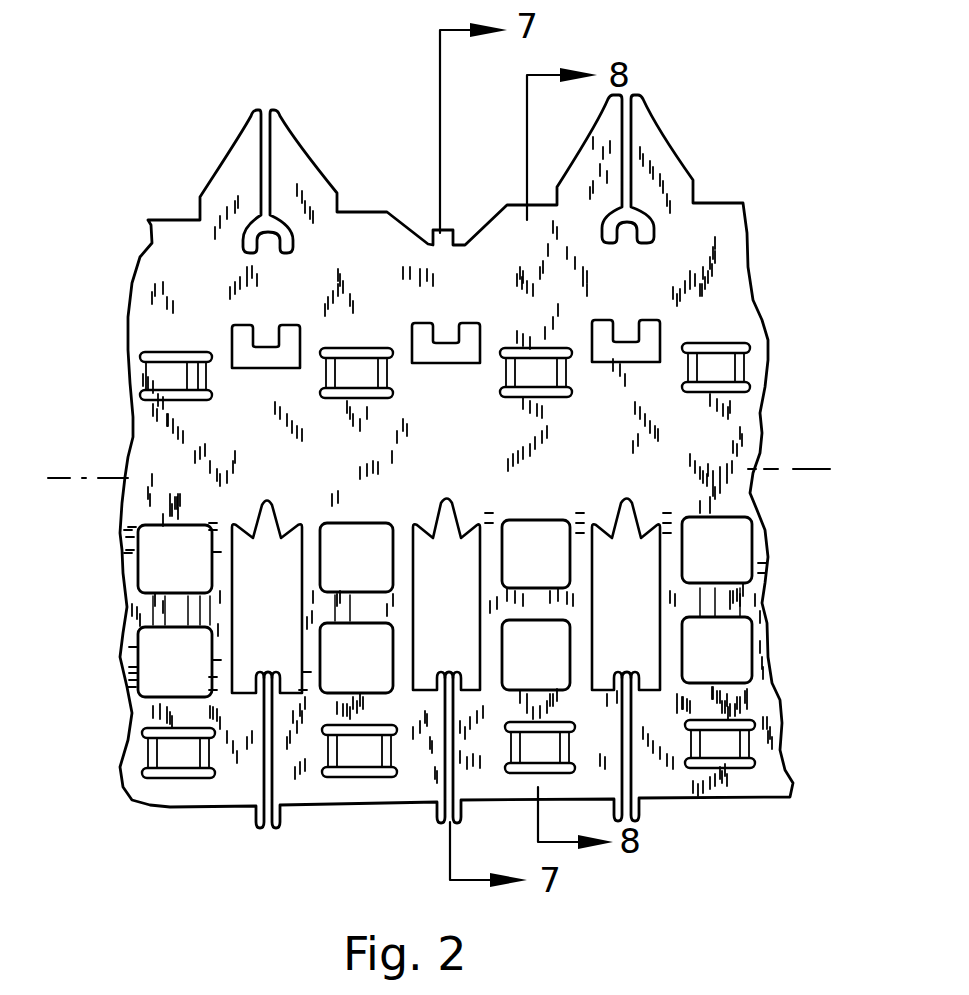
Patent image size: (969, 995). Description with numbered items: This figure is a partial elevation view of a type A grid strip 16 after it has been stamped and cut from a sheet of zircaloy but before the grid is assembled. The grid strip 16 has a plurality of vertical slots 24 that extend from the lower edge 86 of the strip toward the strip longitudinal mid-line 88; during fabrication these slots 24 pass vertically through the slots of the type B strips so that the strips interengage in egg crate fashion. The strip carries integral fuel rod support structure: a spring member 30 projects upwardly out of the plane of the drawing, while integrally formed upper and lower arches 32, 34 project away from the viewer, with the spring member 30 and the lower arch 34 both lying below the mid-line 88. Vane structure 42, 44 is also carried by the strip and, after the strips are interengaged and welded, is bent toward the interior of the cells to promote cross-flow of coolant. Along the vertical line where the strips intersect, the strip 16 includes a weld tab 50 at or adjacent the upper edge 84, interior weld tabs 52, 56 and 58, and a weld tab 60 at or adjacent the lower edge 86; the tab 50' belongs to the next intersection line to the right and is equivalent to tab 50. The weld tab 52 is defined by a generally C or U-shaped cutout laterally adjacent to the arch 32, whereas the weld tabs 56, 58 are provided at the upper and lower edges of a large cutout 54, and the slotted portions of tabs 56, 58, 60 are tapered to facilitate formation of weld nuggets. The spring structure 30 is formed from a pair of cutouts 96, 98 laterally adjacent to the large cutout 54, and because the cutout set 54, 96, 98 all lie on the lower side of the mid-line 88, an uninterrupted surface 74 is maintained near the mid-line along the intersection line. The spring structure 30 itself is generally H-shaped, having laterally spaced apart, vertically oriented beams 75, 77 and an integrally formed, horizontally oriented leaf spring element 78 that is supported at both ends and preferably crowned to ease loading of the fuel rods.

The grid strip 16 is at (137, 258).
The vertical slot 24 is at (433, 803).
The spring member 30 is at (520, 588).
The upper arch 32 is at (572, 368).
The lower arch 34 is at (567, 750).
The vane 42 is at (600, 150).
The vane 44 is at (650, 153).
The weld tab 50 is at (412, 202).
The weld tab 50' is at (696, 182).
The interior weld tab 52 is at (420, 333).
The cutout 54 is at (426, 575).
The interior weld tab 56 is at (386, 466).
The interior weld tab 58 is at (438, 667).
The weld tab 60 is at (463, 817).
The uninterrupted surface 74 is at (466, 434).
The beam 75 is at (495, 548).
The beam 77 is at (580, 643).
The spring element 78 is at (537, 612).
The upper edge 84 is at (520, 203).
The lower edge 86 is at (557, 800).
The longitudinal mid-line 88 is at (803, 468).
The cutout 96 is at (517, 530).
The cutout 98 is at (557, 637).